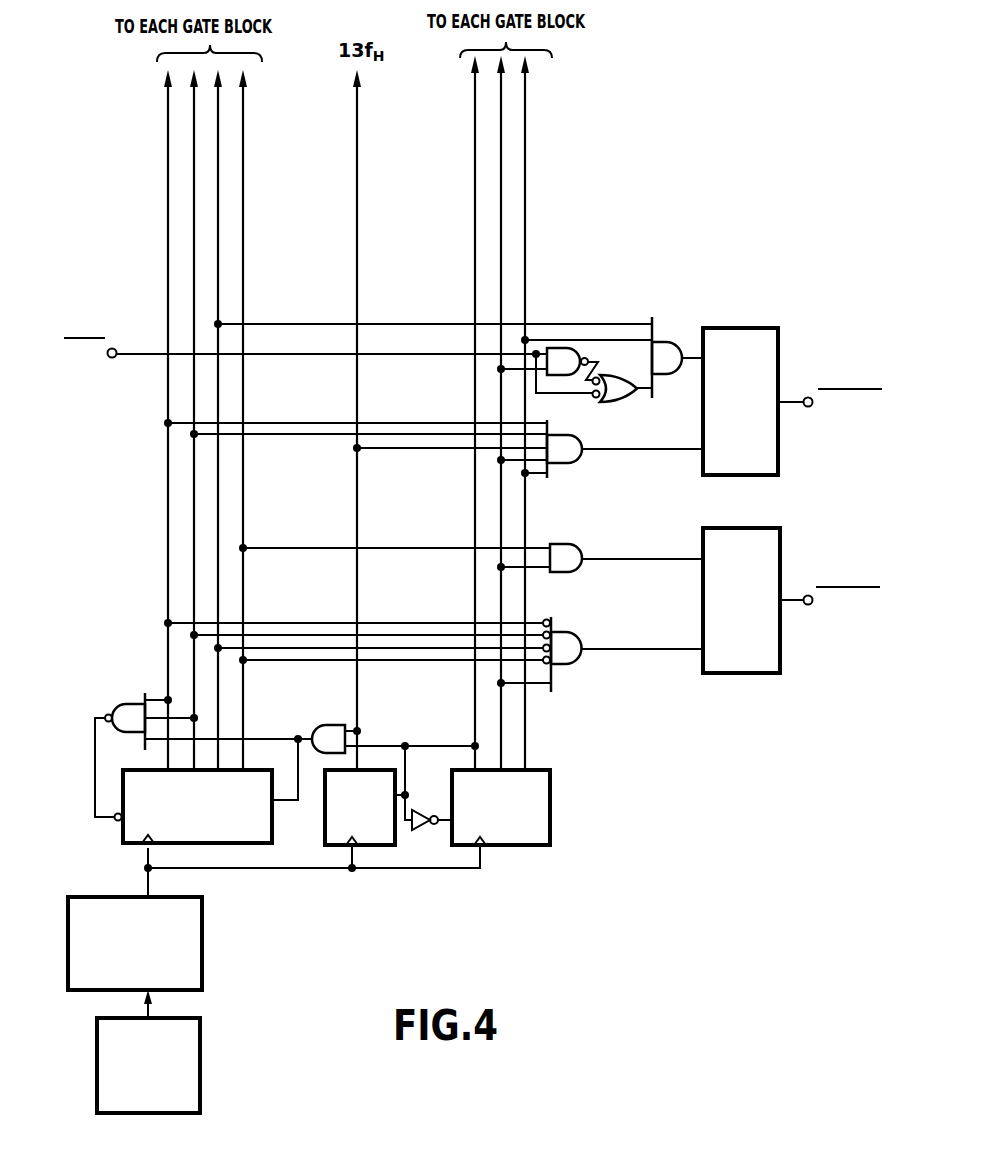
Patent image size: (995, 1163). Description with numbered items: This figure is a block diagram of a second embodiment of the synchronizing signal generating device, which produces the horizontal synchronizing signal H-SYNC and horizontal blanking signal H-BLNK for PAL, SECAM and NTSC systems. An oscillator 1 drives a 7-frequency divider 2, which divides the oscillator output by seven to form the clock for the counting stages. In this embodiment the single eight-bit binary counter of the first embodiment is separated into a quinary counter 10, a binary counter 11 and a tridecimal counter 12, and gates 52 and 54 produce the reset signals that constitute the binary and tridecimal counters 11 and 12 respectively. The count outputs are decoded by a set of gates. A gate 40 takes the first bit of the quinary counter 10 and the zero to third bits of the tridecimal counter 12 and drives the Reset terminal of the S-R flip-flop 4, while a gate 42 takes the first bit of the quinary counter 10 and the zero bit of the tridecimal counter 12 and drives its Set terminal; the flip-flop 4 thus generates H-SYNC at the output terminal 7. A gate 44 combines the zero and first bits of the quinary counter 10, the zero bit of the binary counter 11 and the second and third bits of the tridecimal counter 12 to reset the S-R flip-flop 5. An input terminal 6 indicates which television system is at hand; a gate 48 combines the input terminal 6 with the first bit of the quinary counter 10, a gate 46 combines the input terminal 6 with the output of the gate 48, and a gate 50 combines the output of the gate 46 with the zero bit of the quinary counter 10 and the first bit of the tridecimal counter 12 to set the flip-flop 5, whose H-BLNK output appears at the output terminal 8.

The oscillator 1 is at (200, 1082).
The 7-frequency divider 2 is at (202, 955).
The S-R flip-flop 4 is at (742, 673).
The S-R flip-flop 5 is at (768, 463).
The input terminal 6 is at (114, 349).
The output terminal 7 is at (808, 594).
The output terminal 8 is at (807, 396).
The quinary counter 10 is at (538, 845).
The binary counter 11 is at (325, 835).
The tridecimal counter 12 is at (123, 837).
The gate 40 is at (580, 664).
The gate 42 is at (578, 572).
The gate 44 is at (577, 463).
The gate 46 is at (622, 394).
The gate 48 is at (562, 348).
The gate 50 is at (660, 343).
The gate 52 is at (325, 728).
The gate 54 is at (128, 705).